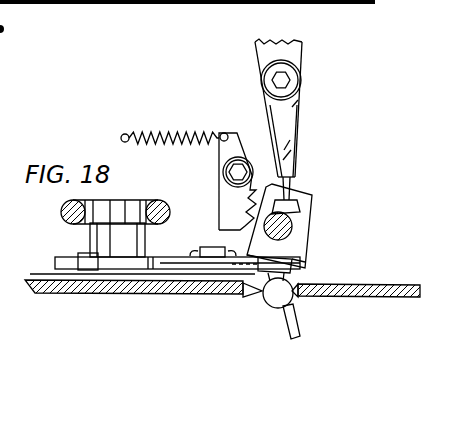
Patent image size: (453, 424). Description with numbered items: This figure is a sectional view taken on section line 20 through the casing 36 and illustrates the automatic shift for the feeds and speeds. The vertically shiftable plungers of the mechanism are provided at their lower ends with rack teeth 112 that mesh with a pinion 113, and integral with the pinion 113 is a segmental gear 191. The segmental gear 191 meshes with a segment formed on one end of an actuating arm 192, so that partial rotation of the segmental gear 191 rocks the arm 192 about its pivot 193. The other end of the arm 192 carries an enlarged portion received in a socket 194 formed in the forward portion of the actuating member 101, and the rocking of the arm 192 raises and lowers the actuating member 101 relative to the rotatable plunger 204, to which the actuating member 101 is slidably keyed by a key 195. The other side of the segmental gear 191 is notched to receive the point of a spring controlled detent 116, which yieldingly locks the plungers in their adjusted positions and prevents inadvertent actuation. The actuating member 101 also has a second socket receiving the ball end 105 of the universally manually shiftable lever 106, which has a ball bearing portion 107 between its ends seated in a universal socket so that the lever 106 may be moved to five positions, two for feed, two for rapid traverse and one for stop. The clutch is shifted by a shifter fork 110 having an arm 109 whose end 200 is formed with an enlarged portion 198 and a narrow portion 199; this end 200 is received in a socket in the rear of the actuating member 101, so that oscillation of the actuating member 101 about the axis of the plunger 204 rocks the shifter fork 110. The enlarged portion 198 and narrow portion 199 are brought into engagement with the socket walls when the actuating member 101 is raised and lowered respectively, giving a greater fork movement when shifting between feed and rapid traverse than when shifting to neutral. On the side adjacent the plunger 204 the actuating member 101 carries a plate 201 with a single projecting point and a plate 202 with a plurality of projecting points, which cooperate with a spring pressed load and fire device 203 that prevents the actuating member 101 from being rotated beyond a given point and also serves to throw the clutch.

The section line 20 is at (42, 271).
The casing 36 is at (149, 295).
The actuating member 101 is at (306, 206).
The ball end 105 is at (240, 300).
The manually shiftable lever 106 is at (297, 332).
The ball bearing portion 107 is at (300, 305).
The arm 109 is at (299, 94).
The shifter fork 110 is at (279, 83).
The rack teeth 112 is at (62, 209).
The pinion 113 is at (148, 203).
The spring controlled detent 116 is at (72, 257).
The segmental gear 191 is at (105, 273).
The actuating arm 192 is at (180, 258).
The pivot 193 is at (200, 290).
The socket 194 is at (293, 266).
The key 195 is at (306, 217).
The enlarged portion 198 is at (297, 193).
The narrow portion 199 is at (297, 180).
The end of arm 200 is at (299, 112).
The plate 201 is at (262, 143).
The plate 202 is at (308, 138).
The load and fire device 203 is at (219, 153).
The rotatable plunger 204 is at (302, 245).